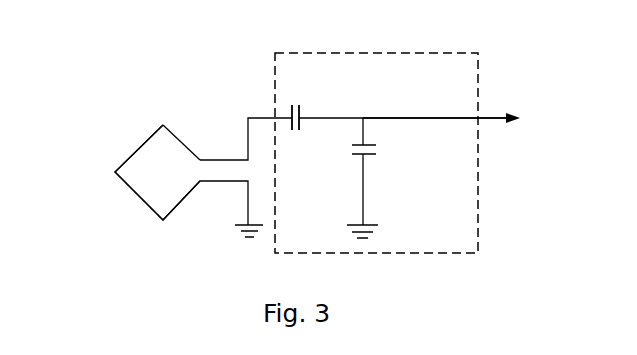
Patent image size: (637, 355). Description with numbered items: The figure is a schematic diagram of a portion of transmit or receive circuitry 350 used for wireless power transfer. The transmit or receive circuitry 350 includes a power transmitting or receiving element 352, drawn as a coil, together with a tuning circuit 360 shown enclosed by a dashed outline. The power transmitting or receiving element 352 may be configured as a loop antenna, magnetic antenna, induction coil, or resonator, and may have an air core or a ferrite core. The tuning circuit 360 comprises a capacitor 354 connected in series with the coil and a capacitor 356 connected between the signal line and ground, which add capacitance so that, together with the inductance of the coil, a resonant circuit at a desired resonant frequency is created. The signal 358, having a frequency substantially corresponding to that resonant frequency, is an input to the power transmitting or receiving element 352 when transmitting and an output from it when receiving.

The transmit or receive circuitry 350 is at (179, 40).
The power transmitting or receiving element 352 is at (130, 144).
The capacitor 354 is at (300, 109).
The capacitor 356 is at (370, 156).
The signal 358 is at (393, 116).
The tuning circuit 360 is at (474, 41).